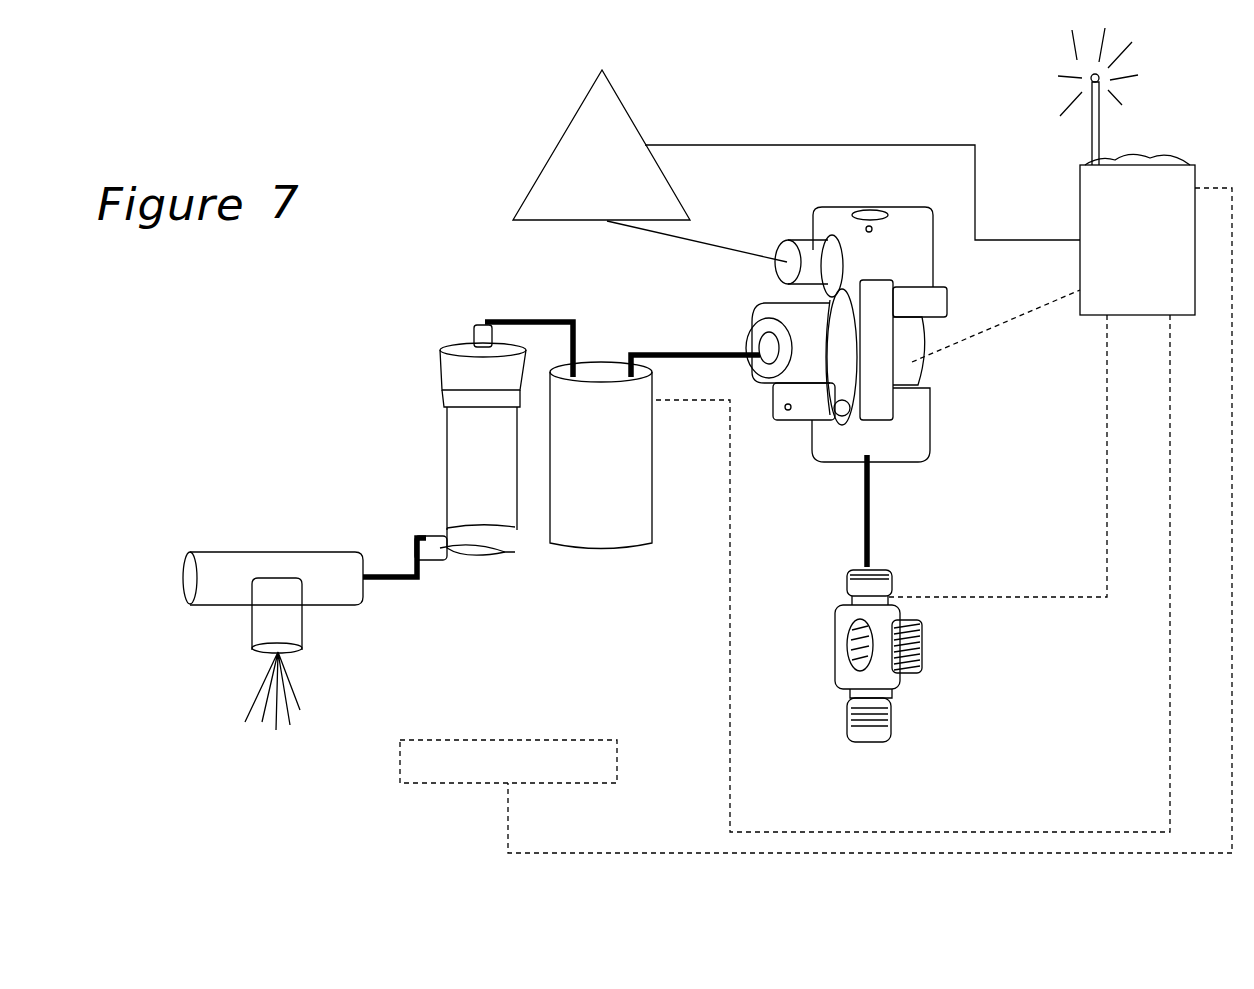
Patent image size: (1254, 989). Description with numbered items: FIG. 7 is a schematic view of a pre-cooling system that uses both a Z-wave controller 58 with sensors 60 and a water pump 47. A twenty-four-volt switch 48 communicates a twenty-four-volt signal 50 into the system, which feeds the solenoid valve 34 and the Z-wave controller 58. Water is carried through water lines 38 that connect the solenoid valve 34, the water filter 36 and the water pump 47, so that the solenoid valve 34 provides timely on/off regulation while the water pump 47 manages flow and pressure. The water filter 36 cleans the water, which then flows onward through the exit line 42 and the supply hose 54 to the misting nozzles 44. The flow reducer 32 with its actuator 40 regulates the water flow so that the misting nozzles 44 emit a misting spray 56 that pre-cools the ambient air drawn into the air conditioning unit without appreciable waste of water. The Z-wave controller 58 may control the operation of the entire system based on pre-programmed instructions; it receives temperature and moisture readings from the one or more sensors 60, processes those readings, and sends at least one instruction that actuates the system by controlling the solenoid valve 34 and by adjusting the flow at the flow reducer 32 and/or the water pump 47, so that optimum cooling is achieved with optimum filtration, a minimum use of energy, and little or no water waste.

The flow reducer 32 is at (878, 698).
The solenoid valve 34 is at (907, 413).
The water filter 36 is at (487, 500).
The water line 38 is at (560, 324).
The valve actuator 40 is at (922, 645).
The exit line 42 is at (400, 588).
The misting nozzles 44 is at (282, 622).
The water pump 47 is at (616, 500).
The 24-volt switch 48 is at (603, 146).
The 24-volt signal 50 is at (828, 145).
The supply hose 54 is at (476, 541).
The misting spray 56 is at (285, 727).
The Z-wave controller 58 is at (1160, 230).
The sensors 60 is at (553, 752).